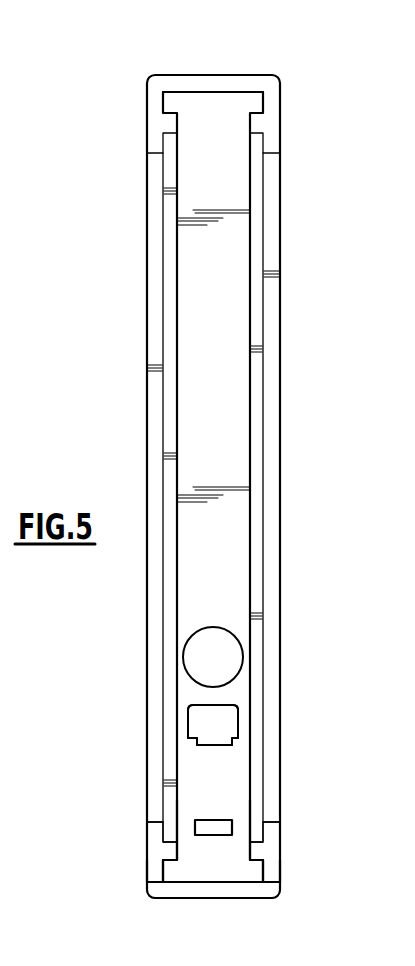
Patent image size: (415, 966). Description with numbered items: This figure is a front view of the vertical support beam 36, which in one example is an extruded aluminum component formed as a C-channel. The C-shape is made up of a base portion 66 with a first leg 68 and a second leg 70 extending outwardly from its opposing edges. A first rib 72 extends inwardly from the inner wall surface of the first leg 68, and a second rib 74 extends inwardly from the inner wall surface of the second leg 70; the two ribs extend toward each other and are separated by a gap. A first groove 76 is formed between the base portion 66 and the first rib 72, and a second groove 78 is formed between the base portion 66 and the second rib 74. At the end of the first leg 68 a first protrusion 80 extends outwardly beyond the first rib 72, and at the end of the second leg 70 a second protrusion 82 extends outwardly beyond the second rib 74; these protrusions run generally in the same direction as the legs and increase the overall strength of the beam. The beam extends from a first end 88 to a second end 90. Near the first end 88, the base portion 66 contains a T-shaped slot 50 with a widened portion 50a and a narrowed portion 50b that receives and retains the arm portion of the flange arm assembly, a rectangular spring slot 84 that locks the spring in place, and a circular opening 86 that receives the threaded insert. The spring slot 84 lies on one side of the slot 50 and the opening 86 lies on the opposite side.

The vertical support beam 36 is at (303, 255).
The second end 90 is at (217, 86).
The opening 86 is at (212, 627).
The slot 50 is at (250, 722).
The widened portion 50a is at (235, 704).
The narrowed portion 50b is at (218, 748).
The spring slot 84 is at (212, 837).
The first rib 72 is at (186, 848).
The second rib 74 is at (248, 853).
The first protrusion 80 is at (155, 822).
The second protrusion 82 is at (272, 822).
The first leg 68 is at (155, 877).
The second leg 70 is at (272, 875).
The first groove 76 is at (168, 878).
The second groove 78 is at (260, 878).
The first end 88 is at (186, 893).
The base portion 66 is at (198, 870).